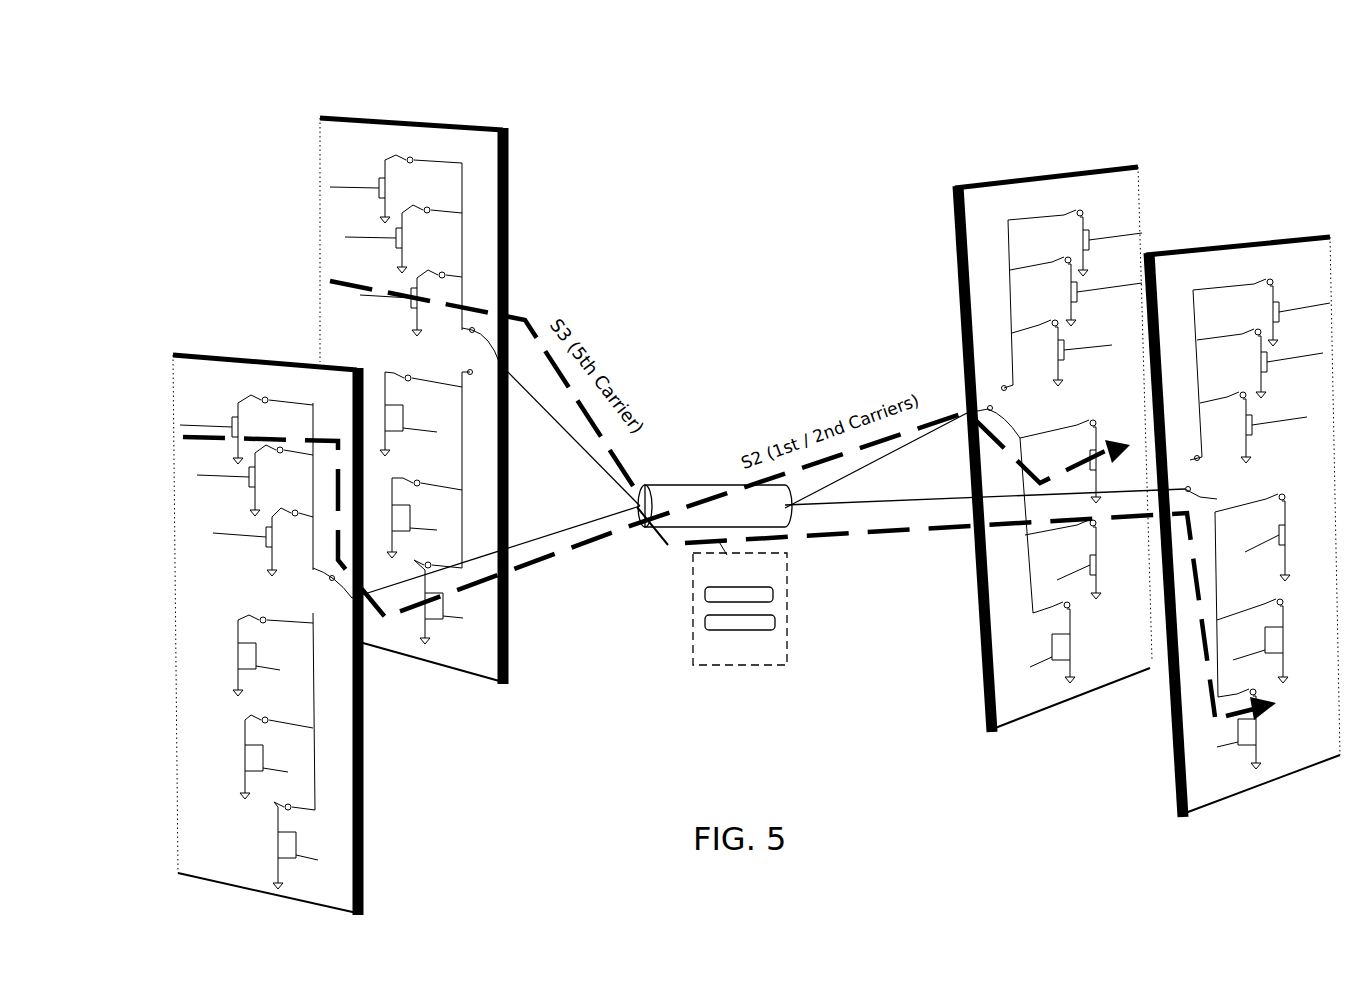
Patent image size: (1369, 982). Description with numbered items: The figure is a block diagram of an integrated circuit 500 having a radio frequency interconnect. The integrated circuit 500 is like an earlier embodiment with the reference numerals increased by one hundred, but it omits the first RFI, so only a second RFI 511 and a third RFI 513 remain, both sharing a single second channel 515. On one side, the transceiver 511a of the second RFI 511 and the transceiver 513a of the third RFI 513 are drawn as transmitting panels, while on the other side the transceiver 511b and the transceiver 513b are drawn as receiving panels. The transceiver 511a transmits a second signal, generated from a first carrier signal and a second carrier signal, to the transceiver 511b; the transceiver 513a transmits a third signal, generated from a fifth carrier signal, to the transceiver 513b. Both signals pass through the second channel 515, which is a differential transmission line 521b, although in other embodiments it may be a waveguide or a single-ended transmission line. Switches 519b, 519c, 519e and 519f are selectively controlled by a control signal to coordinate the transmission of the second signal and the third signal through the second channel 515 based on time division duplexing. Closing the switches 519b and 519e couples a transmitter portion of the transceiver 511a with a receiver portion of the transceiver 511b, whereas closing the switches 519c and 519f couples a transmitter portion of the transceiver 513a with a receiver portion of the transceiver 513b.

The integrated circuit 500 is at (467, 40).
The second RFI 511 is at (384, 774).
The transceiver 511a is at (188, 376).
The transceiver 511b is at (973, 200).
The third RFI 513 is at (552, 221).
The transceiver 513a is at (334, 130).
The transceiver 513b is at (1300, 252).
The second channel 515 is at (681, 484).
The switch 519b is at (362, 606).
The switch 519c is at (508, 382).
The switch 519e is at (1003, 390).
The switch 519f is at (1190, 486).
The differential transmission line 521b is at (740, 602).